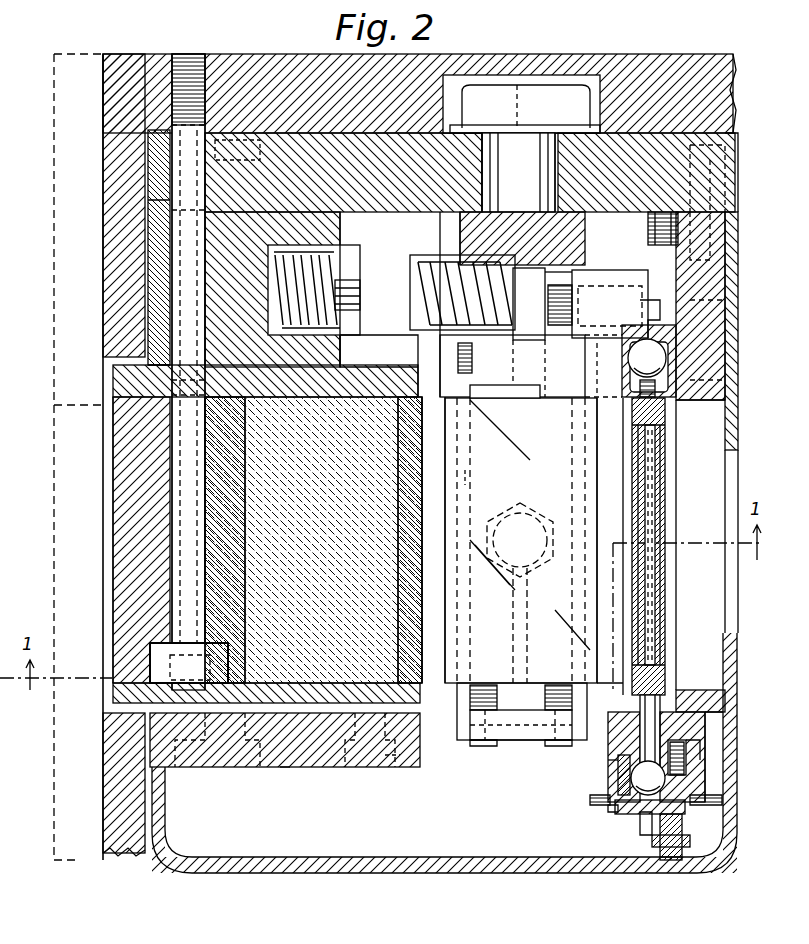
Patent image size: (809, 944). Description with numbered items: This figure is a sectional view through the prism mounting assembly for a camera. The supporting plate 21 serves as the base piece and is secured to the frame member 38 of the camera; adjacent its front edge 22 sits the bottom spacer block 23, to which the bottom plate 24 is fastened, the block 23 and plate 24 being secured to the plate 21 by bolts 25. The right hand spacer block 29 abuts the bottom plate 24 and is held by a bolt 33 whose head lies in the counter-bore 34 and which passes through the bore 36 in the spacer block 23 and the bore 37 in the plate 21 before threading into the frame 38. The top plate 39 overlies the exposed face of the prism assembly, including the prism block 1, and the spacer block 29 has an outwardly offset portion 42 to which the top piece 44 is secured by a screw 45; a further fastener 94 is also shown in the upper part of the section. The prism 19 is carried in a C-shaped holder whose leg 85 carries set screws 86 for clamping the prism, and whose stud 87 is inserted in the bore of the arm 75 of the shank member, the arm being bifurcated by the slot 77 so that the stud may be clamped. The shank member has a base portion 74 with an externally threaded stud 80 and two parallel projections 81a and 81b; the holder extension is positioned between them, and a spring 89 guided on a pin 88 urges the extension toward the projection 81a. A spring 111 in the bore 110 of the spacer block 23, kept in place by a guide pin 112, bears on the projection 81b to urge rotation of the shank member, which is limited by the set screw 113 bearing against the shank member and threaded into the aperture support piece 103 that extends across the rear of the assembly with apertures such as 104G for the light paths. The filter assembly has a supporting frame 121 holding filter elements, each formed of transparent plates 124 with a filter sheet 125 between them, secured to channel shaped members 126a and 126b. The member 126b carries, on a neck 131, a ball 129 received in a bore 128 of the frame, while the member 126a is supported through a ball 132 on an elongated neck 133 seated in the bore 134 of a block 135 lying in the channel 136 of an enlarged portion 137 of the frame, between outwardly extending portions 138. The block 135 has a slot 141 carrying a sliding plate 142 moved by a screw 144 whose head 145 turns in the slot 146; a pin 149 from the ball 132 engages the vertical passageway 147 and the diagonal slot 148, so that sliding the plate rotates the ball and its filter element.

The prism block 1 is at (383, 616).
The prism 19 is at (570, 470).
The supporting plate 21 is at (640, 147).
The front edge 22 is at (148, 192).
The bottom spacer block 23 is at (160, 284).
The bottom plate 24 is at (130, 382).
The bolt 25 is at (273, 205).
The right hand spacer block 29 is at (130, 608).
The bolt 33 is at (188, 492).
The counter-bore 34 is at (152, 652).
The bore 36 is at (170, 241).
The bore 37 is at (168, 153).
The frame member 38 is at (240, 62).
The top plate 39 is at (113, 693).
The outwardly offset portion 42 is at (408, 708).
The top piece 44 is at (300, 762).
The screw 45 is at (395, 768).
The base portion 74 is at (588, 258).
The arm 75 is at (466, 474).
The slot 77 is at (520, 636).
The externally threaded stud 80 is at (518, 172).
The projection 81a is at (628, 316).
The projection 81b is at (392, 509).
The leg 85 is at (463, 740).
The set screw 86 is at (545, 745).
The stud 87 is at (543, 515).
The pin 88 is at (448, 268).
The spring 89 is at (503, 332).
The bolt 94 is at (552, 90).
The aperture support piece 103 is at (715, 350).
The channel 104G is at (716, 598).
The bore 110 is at (340, 250).
The spring 111 is at (335, 330).
The guide pin 112 is at (355, 300).
The set screw 113 is at (650, 232).
The supporting frame 121 is at (628, 347).
The transparent plate 124 is at (655, 478).
The filter sheet 125 is at (655, 500).
The channel shaped member 126a is at (665, 675).
The channel shaped member 126b is at (600, 408).
The bore 128 is at (630, 365).
The ball 129 is at (690, 402).
The neck 131 is at (640, 386).
The ball 132 is at (606, 806).
The elongated neck 133 is at (648, 743).
The bore 134 is at (620, 780).
The block 135 is at (642, 814).
The channel 136 is at (705, 785).
The enlarged portion 137 is at (700, 755).
The outwardly extending portion 138 is at (608, 762).
The slot 141 is at (700, 768).
The plate 142 is at (680, 862).
The screw 144 is at (660, 875).
The head 145 is at (662, 860).
The slot 146 is at (720, 840).
The passageway 147 is at (648, 778).
The slot 148 is at (688, 692).
The pin 149 is at (722, 800).